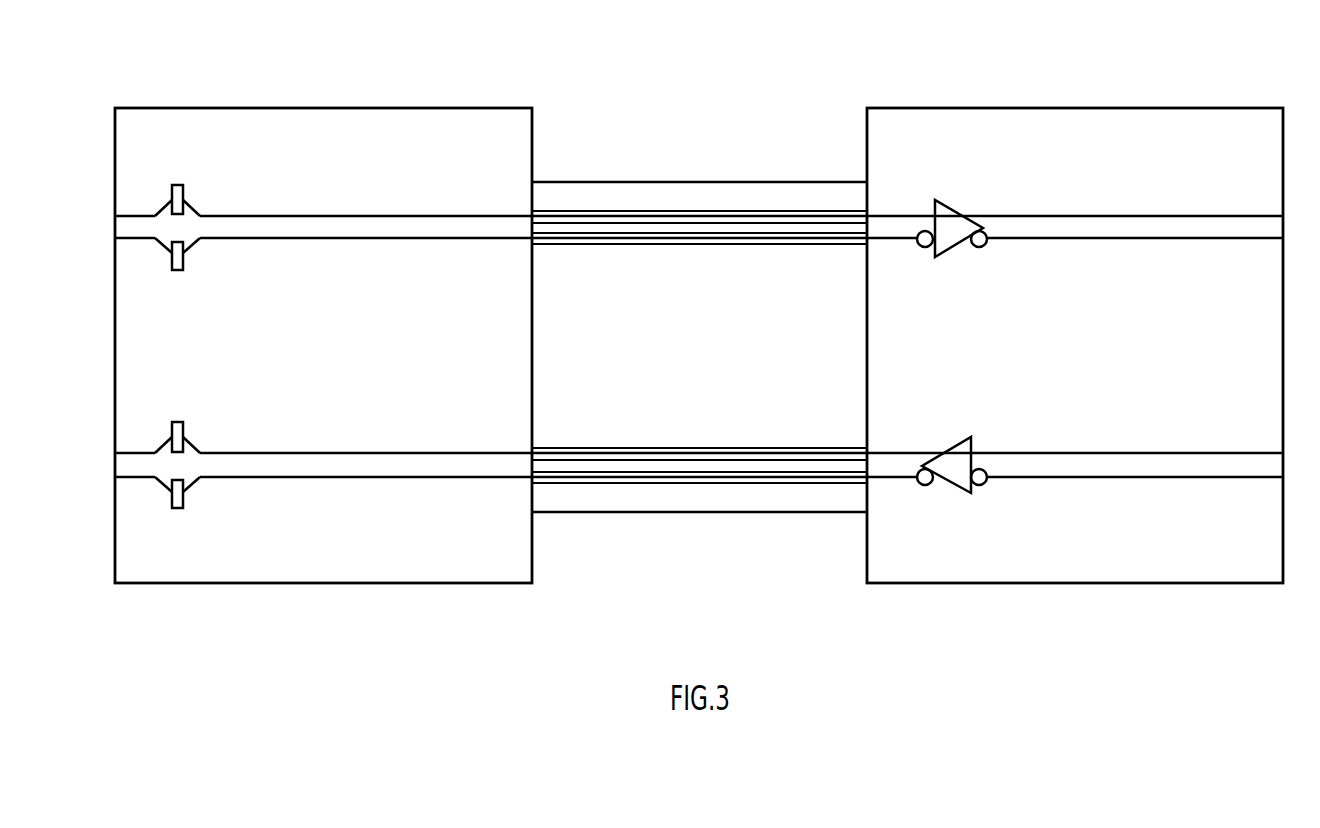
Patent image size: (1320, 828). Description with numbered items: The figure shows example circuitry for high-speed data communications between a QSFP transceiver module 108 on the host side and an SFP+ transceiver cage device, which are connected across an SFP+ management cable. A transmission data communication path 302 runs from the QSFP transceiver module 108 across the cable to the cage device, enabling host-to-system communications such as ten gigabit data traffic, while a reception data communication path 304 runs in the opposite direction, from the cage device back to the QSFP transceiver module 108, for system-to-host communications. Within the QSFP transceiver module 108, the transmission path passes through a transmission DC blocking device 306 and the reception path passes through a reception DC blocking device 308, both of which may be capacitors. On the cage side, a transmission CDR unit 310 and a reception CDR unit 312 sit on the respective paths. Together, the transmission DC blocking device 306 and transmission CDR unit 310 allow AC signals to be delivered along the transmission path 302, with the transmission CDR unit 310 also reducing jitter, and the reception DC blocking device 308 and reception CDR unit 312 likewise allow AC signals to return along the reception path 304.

The QSFP transceiver module 108 is at (358, 108).
The transmission data communication path 302 is at (428, 239).
The reception data communication path 304 is at (1092, 453).
The transmission DC blocking device 306 is at (183, 265).
The reception DC blocking device 308 is at (183, 432).
The transmission clock data recovery (CDR) unit 310 is at (957, 207).
The reception CDR unit 312 is at (957, 445).